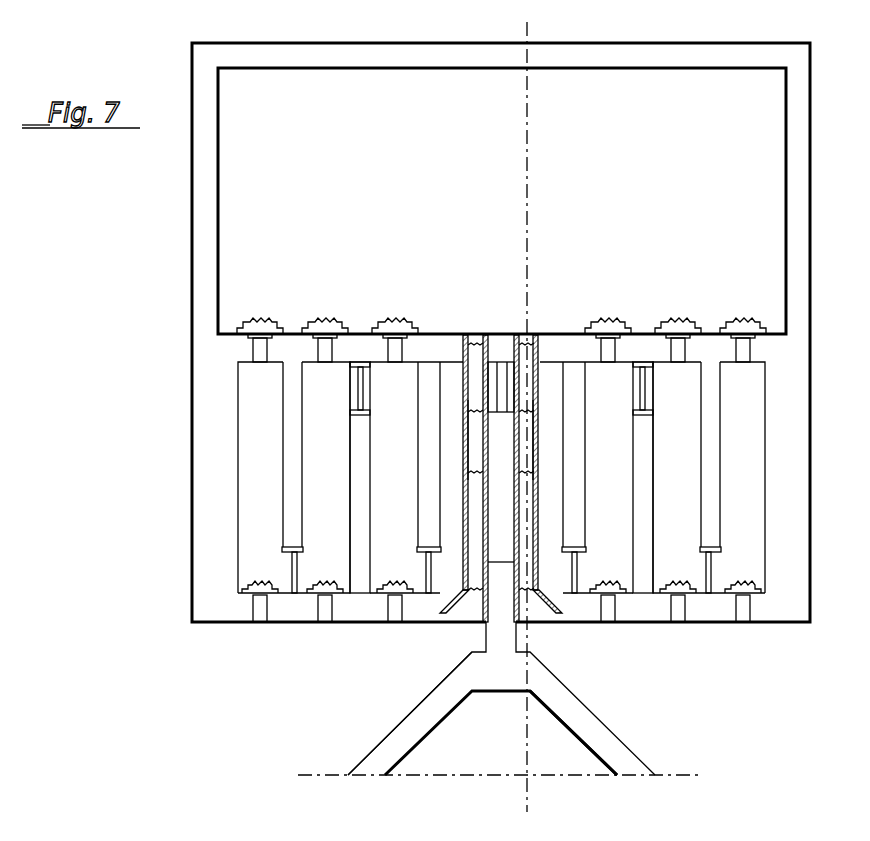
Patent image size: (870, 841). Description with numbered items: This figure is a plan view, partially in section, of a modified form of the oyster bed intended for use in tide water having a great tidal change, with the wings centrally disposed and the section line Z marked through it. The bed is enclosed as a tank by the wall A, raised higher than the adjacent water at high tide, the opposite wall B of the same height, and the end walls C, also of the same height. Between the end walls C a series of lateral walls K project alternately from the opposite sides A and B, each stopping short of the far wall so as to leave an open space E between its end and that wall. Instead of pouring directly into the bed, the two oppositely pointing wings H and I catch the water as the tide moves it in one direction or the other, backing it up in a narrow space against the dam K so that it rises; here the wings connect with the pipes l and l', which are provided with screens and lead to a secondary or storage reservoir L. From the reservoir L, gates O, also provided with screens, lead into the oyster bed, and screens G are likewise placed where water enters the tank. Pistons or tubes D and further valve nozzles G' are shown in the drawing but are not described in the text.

The wall A is at (355, 623).
The wall B is at (538, 341).
The end walls C is at (207, 468).
The inner tube D is at (371, 481).
The open space E is at (364, 392).
The screens G is at (499, 466).
The valve nozzle G' is at (501, 462).
The wing H is at (580, 722).
The wing I is at (417, 721).
The lateral walls K is at (498, 598).
The secondary or storage reservoir L is at (404, 218).
The gates O is at (330, 329).
The pipe l is at (543, 440).
The pipe l' is at (455, 440).
The section line z-z Z is at (499, 421).